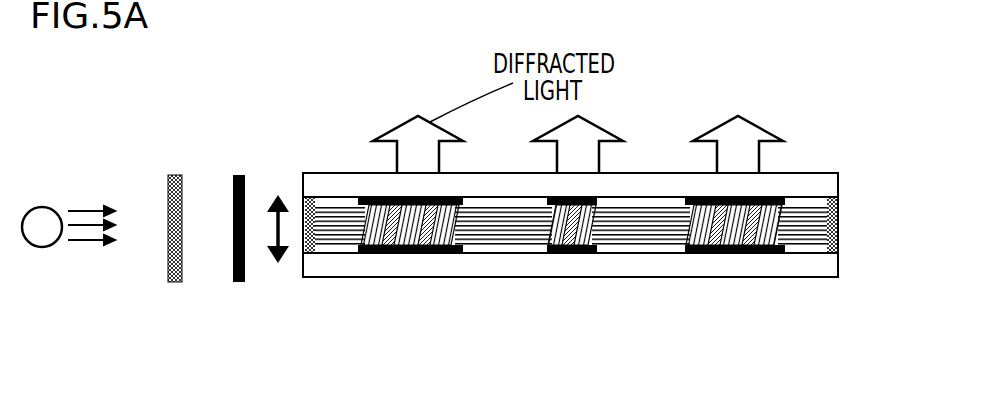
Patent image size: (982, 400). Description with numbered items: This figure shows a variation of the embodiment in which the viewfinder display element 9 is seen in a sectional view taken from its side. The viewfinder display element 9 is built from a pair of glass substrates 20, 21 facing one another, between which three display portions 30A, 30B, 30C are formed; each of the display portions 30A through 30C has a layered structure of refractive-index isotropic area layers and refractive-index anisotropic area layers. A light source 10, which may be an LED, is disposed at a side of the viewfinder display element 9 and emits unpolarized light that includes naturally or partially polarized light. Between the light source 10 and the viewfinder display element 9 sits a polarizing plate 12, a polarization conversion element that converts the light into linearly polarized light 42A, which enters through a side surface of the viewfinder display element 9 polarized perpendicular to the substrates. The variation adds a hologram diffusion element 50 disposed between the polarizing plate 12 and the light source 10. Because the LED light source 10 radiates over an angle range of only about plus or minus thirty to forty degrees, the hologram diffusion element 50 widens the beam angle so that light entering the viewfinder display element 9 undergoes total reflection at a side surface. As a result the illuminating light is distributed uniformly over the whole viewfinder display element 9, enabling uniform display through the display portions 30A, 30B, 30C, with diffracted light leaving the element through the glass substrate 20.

The viewfinder display element 9 is at (810, 289).
The light source 10 is at (52, 210).
The polarizing plate 12 is at (237, 283).
The glass substrate 20 is at (820, 183).
The glass substrate 21 is at (827, 268).
The display portion 30A is at (358, 257).
The display portion 30B is at (543, 257).
The display portion 30C is at (680, 260).
The linearly polarized light 42A is at (278, 197).
The hologram diffusion element 50 is at (172, 283).